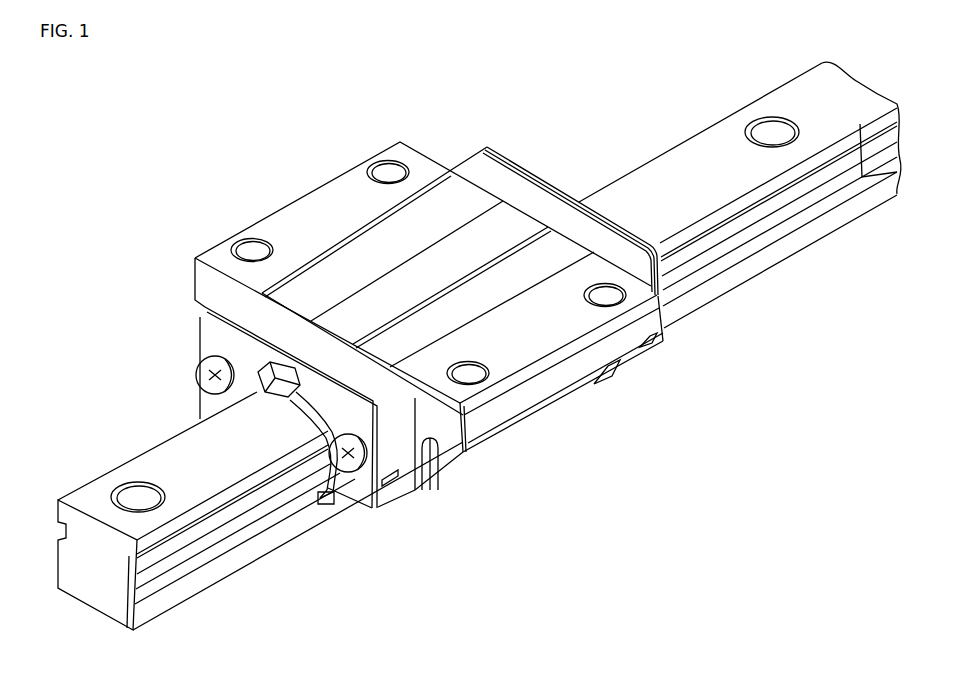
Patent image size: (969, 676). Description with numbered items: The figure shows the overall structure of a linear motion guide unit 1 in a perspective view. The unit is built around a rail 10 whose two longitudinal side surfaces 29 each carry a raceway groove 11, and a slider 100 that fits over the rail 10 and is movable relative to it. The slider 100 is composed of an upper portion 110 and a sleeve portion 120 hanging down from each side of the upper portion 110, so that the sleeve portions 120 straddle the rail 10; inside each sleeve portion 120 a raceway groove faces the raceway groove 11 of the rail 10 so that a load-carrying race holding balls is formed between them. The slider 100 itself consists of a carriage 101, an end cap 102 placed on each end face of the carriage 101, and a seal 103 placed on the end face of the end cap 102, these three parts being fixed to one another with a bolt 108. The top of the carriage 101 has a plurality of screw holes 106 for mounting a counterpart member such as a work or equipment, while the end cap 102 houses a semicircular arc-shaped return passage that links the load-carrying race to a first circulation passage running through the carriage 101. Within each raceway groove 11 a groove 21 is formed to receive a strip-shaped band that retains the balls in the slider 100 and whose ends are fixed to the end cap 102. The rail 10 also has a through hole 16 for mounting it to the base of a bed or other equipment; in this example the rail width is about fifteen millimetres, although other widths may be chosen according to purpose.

The linear motion guide unit 1 is at (200, 155).
The rail 10 is at (90, 497).
The raceway groove 11 is at (238, 515).
The through hole 16 is at (770, 128).
The groove 21 is at (122, 568).
The longitudinal side surface 29 is at (183, 570).
The slider 100 is at (318, 207).
The carriage 101 is at (550, 383).
The end cap 102 is at (393, 484).
The seal 103 is at (365, 490).
The screw hole 106 is at (388, 170).
The bolt 108 is at (197, 375).
The upper portion 110 is at (449, 287).
The sleeve portion 120 is at (455, 435).